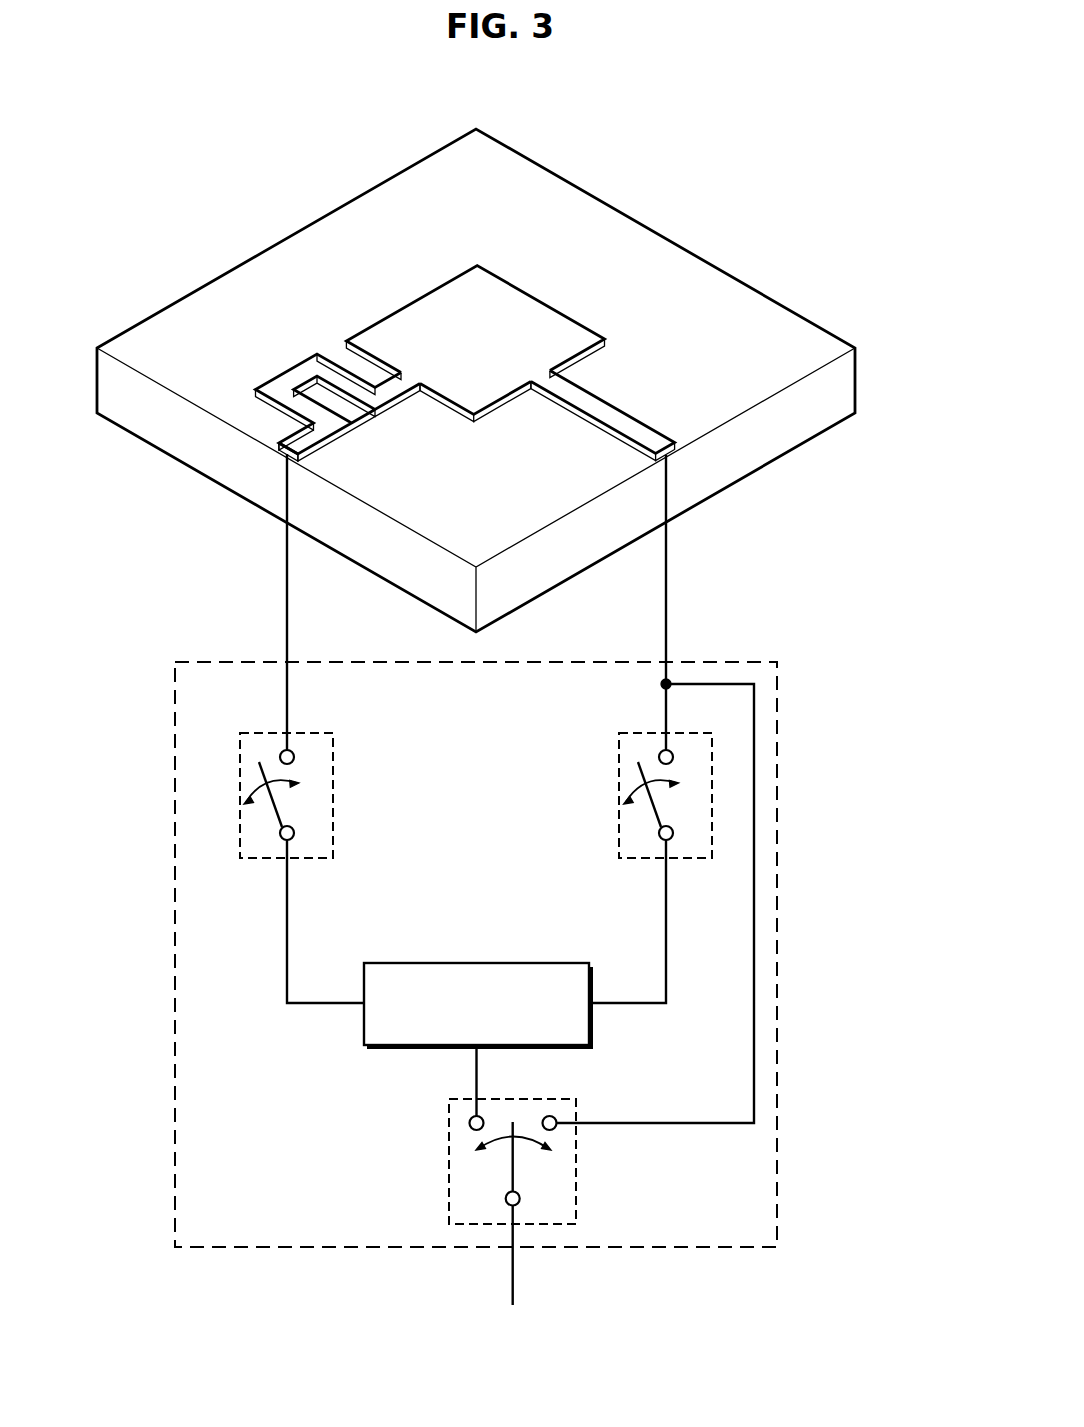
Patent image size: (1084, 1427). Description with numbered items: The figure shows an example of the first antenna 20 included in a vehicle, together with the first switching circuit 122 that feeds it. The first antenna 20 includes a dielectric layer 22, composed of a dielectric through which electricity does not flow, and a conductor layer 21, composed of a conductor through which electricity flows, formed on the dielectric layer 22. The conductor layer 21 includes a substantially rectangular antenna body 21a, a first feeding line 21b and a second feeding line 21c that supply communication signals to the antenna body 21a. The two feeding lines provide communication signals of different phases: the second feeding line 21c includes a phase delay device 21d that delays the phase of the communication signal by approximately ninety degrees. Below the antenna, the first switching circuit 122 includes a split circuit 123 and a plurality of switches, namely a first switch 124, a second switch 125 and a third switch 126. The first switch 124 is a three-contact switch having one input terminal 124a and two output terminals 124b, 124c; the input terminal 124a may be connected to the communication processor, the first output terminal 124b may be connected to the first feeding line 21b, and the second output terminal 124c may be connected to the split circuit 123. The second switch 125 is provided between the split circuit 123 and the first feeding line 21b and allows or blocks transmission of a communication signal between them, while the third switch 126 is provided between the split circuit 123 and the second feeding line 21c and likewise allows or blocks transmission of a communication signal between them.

The first antenna 20 is at (657, 195).
The conductor layer 21 is at (418, 291).
The antenna body 21a is at (573, 320).
The first feeding line 21b is at (655, 443).
The second feeding line 21c is at (293, 432).
The phase delay device 21d is at (262, 403).
The dielectric layer 22 is at (856, 377).
The first switching circuit 122 is at (752, 661).
The split circuit 123 is at (574, 962).
The first switch 124 is at (577, 1173).
The input terminal 124a is at (506, 1198).
The first output terminal 124b is at (545, 1118).
The second output terminal 124c is at (469, 1123).
The second switch 125 is at (628, 732).
The third switch 126 is at (325, 731).